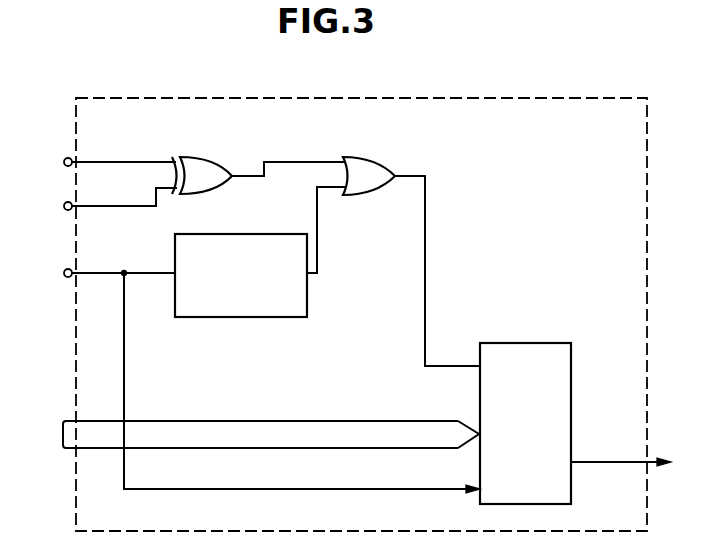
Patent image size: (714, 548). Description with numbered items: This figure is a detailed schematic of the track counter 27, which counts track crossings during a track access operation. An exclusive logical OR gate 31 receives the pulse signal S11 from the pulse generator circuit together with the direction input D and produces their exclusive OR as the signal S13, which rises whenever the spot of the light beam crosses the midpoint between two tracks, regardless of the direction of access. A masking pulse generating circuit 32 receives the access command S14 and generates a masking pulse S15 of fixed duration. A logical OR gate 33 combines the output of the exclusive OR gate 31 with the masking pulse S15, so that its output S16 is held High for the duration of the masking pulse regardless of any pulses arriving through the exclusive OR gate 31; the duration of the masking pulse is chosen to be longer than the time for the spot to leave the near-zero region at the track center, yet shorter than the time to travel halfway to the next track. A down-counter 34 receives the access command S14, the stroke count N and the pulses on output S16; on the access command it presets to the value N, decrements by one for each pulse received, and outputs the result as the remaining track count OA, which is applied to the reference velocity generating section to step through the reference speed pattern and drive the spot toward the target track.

The track counter 27 is at (448, 96).
The exclusive logical OR gate 31 is at (200, 155).
The masking pulse generating circuit 32 is at (241, 320).
The logical OR gate 33 is at (395, 158).
The down-counter 34 is at (489, 343).
The pulse signal S11 is at (95, 162).
The direction input D is at (100, 202).
The exclusive OR output signal S13 is at (300, 152).
The access command S14 is at (244, 378).
The masking pulse S15 is at (322, 248).
The OR gate output S16 is at (430, 196).
The stroke count N is at (250, 434).
The remaining track count OA is at (625, 450).